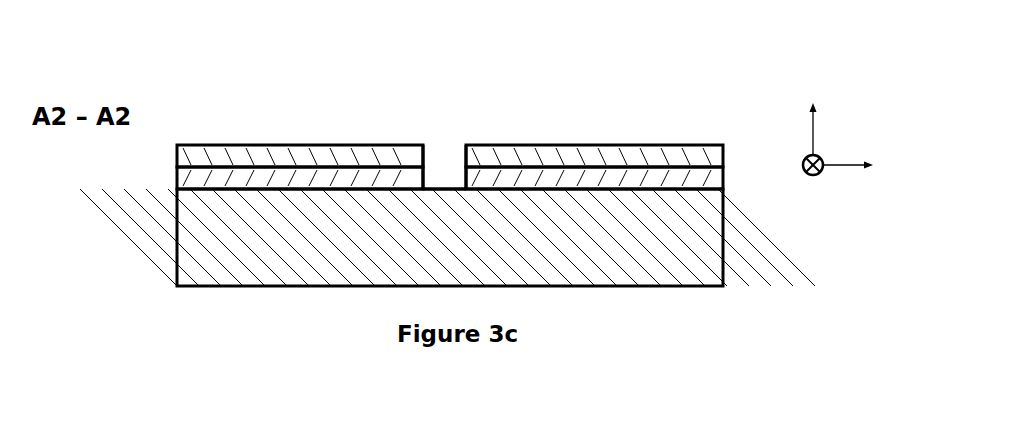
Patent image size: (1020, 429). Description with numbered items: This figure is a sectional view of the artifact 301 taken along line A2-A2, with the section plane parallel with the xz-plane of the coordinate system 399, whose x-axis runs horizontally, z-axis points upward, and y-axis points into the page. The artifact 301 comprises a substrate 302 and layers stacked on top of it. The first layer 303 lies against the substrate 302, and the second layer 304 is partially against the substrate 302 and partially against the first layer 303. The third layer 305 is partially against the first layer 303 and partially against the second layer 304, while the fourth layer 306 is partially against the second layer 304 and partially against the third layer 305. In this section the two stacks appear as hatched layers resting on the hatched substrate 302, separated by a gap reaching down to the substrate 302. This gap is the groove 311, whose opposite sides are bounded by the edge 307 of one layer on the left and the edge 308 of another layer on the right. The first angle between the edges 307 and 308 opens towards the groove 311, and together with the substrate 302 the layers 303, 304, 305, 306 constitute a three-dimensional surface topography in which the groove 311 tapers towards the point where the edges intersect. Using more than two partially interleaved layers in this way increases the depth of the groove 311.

The artifact 301 is at (386, 108).
The substrate 302 is at (457, 248).
The first layer 303 is at (176, 176).
The second layer 304 is at (724, 177).
The third layer 305 is at (238, 143).
The fourth layer 306 is at (593, 143).
The edge 307 is at (433, 176).
The edge 308 is at (465, 176).
The groove 311 is at (444, 174).
The coordinate system 399 is at (870, 143).